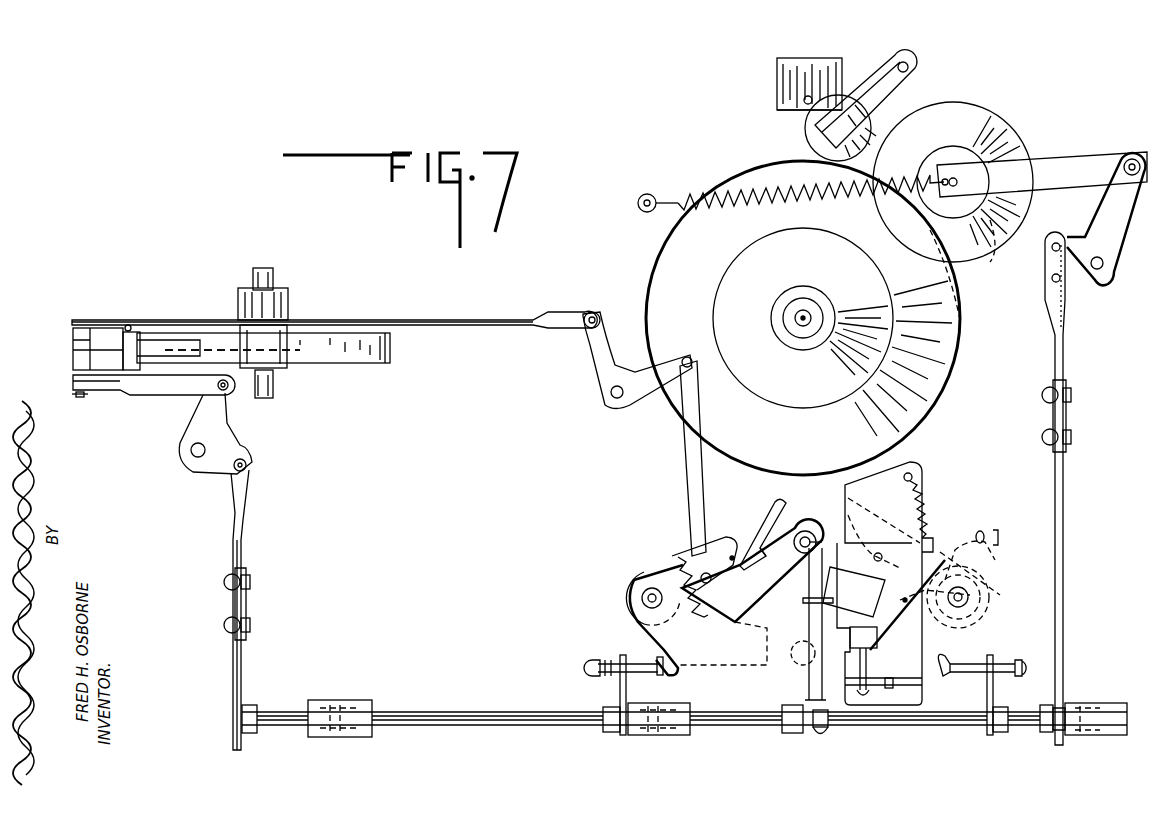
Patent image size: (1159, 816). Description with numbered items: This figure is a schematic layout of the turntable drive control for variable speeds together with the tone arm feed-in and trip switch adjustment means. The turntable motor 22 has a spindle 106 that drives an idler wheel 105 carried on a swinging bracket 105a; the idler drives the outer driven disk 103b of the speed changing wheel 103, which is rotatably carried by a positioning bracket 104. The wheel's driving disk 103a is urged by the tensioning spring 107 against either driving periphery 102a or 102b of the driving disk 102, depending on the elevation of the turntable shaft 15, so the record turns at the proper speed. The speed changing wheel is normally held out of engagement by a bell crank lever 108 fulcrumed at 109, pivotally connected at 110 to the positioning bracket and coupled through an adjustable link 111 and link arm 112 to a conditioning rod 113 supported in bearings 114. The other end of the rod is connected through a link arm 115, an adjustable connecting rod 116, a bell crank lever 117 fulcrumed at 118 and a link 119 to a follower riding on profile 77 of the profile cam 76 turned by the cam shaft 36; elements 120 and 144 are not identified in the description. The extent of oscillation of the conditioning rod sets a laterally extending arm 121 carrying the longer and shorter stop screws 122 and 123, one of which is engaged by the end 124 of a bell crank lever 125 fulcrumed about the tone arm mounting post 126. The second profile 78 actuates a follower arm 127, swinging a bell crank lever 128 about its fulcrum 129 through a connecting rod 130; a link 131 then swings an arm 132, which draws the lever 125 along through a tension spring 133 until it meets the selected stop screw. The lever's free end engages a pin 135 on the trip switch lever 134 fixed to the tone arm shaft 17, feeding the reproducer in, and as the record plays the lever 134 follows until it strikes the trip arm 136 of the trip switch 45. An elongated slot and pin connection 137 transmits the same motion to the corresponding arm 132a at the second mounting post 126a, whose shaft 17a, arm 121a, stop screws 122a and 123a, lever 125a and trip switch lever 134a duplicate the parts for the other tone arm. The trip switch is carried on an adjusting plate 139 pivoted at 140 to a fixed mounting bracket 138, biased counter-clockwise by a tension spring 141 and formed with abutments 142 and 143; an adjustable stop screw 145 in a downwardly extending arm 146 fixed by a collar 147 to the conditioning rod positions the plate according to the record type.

The turntable shaft 15 is at (815, 325).
The tone arm shaft 17 is at (648, 590).
The tone arm shaft 17a is at (968, 590).
The turntable motor 22 is at (782, 100).
The cam shaft 36 is at (263, 275).
The trip switch 45 is at (854, 592).
The profile cam 76 is at (305, 355).
The cam profile 77 is at (220, 352).
The cam profile 78 is at (168, 335).
The driving disk 102 is at (948, 352).
The driving periphery 102a is at (962, 318).
The driving periphery 102b is at (897, 301).
The speed changing wheel 103 is at (1010, 138).
The driving disk 103a is at (978, 205).
The outer driven disk 103b is at (993, 250).
The positioning bracket 104 is at (1080, 165).
The idler wheel 105 is at (815, 135).
The swinging bracket 105a is at (912, 76).
The spindle 106 is at (808, 95).
The tensioning spring 107 is at (700, 195).
The bell crank lever 108 is at (1117, 220).
The fulcrum 109 is at (1100, 270).
The pivotal connection 110 is at (1132, 159).
The adjustable link 111 is at (1065, 505).
The link arm 112 is at (1057, 703).
The conditioning rod 113 is at (965, 727).
The bearings 114 is at (350, 702).
The link arm 115 is at (250, 735).
The adjustable connecting rod 116 is at (243, 665).
The bell crank lever 117 is at (218, 455).
The fulcrum 118 is at (195, 455).
The link 119 is at (150, 392).
The bracket 120 is at (110, 372).
The laterally extending arm 121 is at (618, 690).
The laterally extending arm 121a is at (998, 690).
The stop screw 122 is at (650, 672).
The stop screw 122a is at (958, 668).
The stop screw 123 is at (620, 660).
The stop screw 123a is at (993, 662).
The end of bell crank lever 124 is at (672, 668).
The bell crank lever 125 is at (666, 560).
The bell crank lever 125a is at (954, 676).
The tone arm mounting post 126 is at (633, 595).
The tone arm mounting post 126a is at (975, 590).
The follower arm 127 is at (130, 326).
The bell crank lever 128 is at (603, 360).
The fulcrum 129 is at (612, 397).
The connecting rod 130 is at (465, 318).
The link 131 is at (692, 470).
The arm 132 is at (770, 553).
The arm 132a is at (812, 530).
The tension spring 133 is at (713, 603).
The trip switch lever 134 is at (742, 522).
The trip switch lever 134a is at (930, 560).
The pin 135 is at (732, 555).
The trip arm 136 is at (805, 601).
The elongated slot and pin connection 137 is at (805, 528).
The fixed mounting bracket 138 is at (905, 470).
The trip switch adjusting plate 139 is at (932, 535).
The pivotal connection 140 is at (897, 605).
The tension spring 141 is at (925, 488).
The abutment 142 is at (901, 670).
The abutment 143 is at (808, 690).
The screw 144 is at (866, 690).
The adjustable stop screw 145 is at (820, 730).
The downwardly extending arm 146 is at (838, 733).
The collar 147 is at (793, 735).